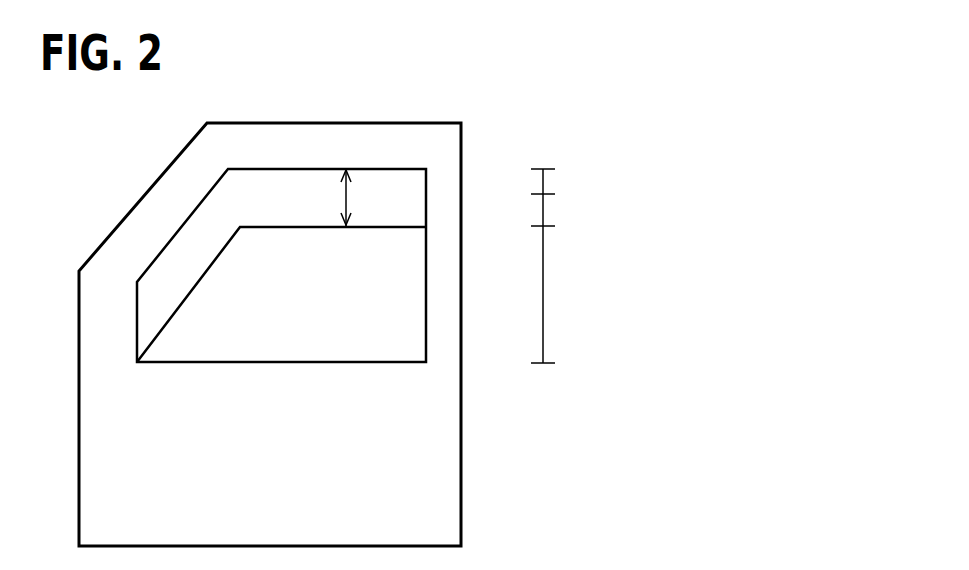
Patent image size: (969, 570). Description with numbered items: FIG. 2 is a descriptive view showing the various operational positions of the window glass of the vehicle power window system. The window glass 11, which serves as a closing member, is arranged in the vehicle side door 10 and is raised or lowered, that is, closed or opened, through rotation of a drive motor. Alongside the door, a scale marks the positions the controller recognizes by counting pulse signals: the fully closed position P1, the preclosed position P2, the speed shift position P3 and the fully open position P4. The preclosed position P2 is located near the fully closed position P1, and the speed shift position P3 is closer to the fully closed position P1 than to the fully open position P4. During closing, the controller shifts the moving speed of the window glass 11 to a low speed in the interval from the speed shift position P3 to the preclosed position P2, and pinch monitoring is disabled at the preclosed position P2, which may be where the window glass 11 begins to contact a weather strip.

The vehicle side door 10 is at (400, 123).
The window glass 11 is at (415, 271).
The fully closed position P1 is at (699, 168).
The preclosed position P2 is at (680, 194).
The speed shift position P3 is at (693, 229).
The fully open position P4 is at (686, 366).